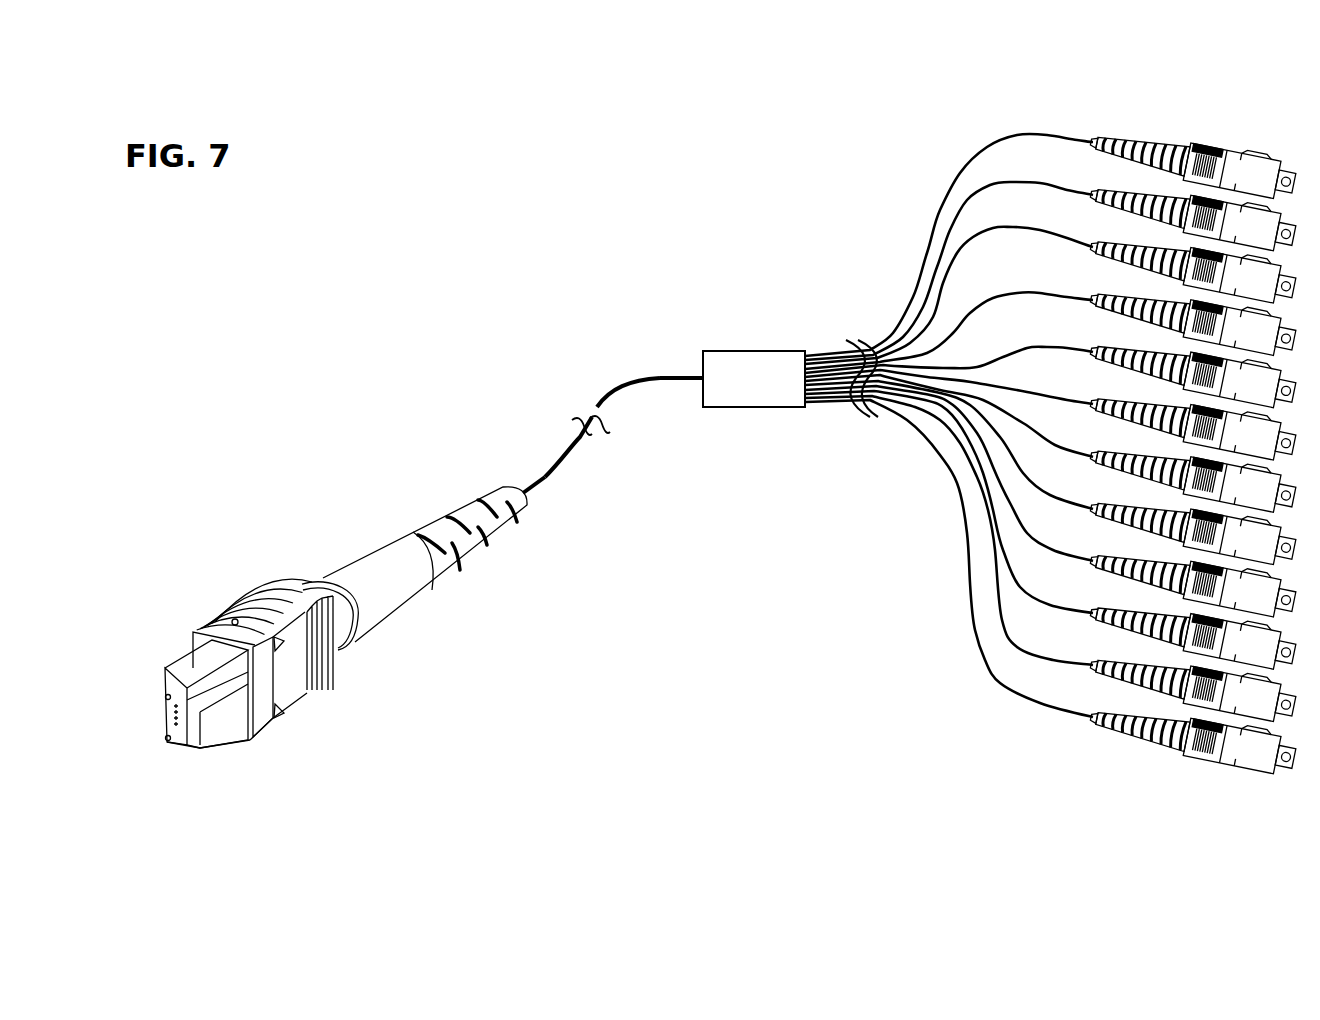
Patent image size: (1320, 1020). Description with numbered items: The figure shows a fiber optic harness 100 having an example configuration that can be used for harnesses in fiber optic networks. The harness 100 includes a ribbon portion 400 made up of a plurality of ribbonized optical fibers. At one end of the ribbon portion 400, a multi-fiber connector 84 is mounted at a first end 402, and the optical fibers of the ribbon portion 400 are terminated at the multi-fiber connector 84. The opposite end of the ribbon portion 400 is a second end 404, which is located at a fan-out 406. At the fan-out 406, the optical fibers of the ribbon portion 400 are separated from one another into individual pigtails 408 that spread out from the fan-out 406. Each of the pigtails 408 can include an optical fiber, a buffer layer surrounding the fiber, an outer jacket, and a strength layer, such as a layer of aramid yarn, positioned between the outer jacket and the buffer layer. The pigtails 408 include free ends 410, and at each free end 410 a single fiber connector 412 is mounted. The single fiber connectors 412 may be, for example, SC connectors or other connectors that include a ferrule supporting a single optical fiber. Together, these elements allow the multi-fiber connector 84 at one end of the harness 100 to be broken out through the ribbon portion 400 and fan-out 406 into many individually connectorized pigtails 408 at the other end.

The multi-fiber connector 84 is at (217, 617).
The harness 100 is at (420, 420).
The ribbon portion 400 is at (615, 390).
The first end 402 is at (525, 491).
The second end 404 is at (703, 378).
The fan-out 406 is at (763, 350).
The pigtails 408 is at (968, 167).
The free ends 410 is at (1078, 137).
The single fiber connectors 412 is at (1247, 150).